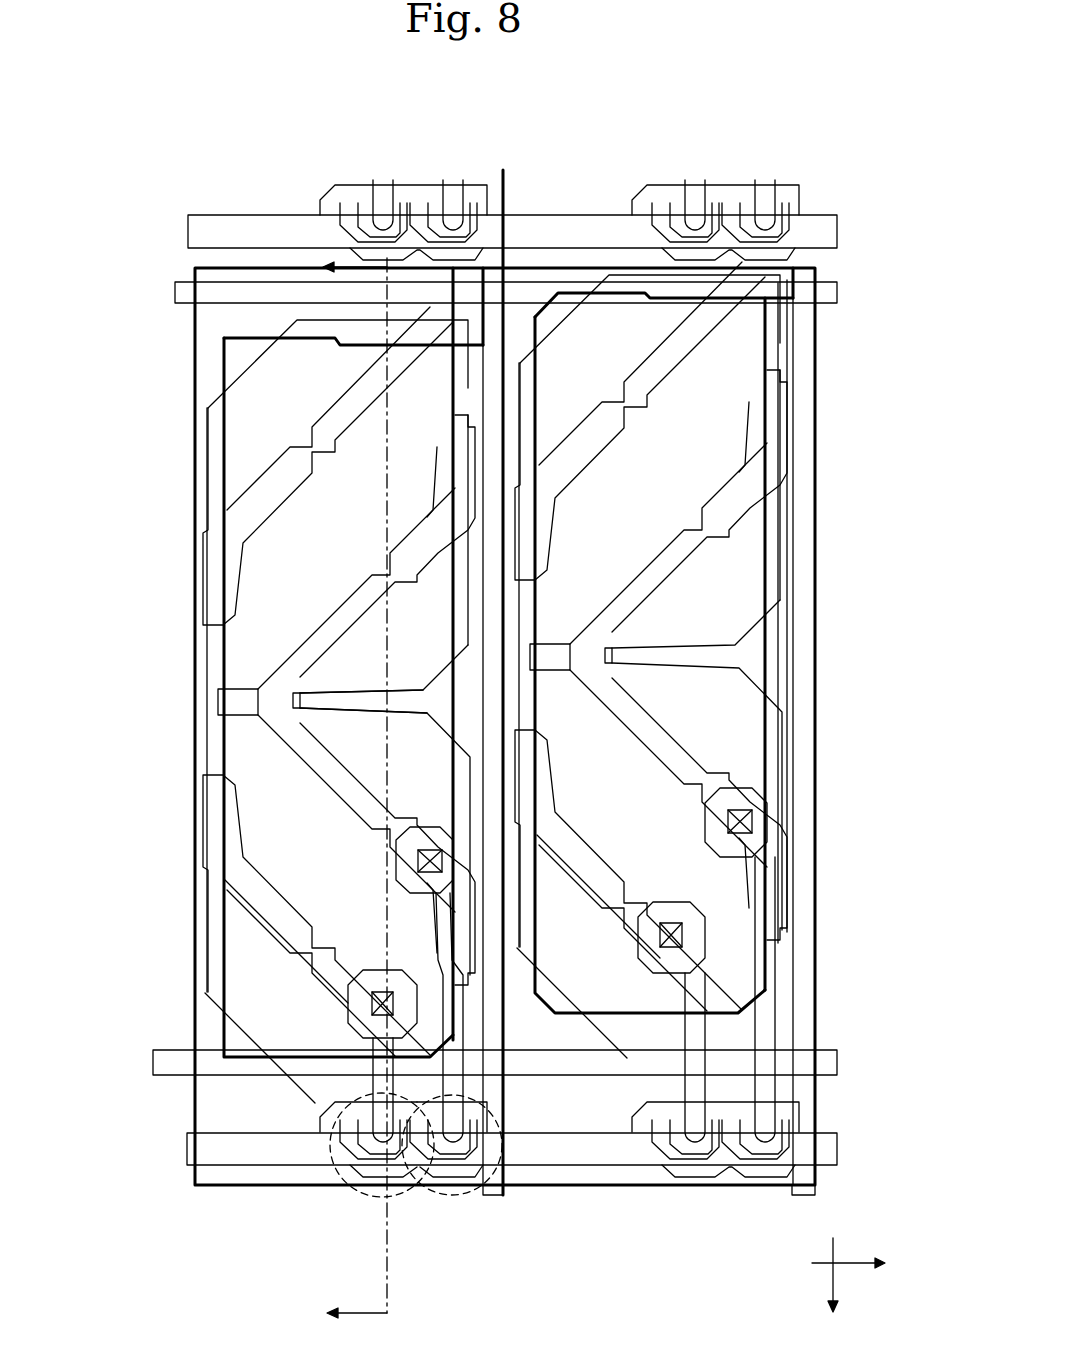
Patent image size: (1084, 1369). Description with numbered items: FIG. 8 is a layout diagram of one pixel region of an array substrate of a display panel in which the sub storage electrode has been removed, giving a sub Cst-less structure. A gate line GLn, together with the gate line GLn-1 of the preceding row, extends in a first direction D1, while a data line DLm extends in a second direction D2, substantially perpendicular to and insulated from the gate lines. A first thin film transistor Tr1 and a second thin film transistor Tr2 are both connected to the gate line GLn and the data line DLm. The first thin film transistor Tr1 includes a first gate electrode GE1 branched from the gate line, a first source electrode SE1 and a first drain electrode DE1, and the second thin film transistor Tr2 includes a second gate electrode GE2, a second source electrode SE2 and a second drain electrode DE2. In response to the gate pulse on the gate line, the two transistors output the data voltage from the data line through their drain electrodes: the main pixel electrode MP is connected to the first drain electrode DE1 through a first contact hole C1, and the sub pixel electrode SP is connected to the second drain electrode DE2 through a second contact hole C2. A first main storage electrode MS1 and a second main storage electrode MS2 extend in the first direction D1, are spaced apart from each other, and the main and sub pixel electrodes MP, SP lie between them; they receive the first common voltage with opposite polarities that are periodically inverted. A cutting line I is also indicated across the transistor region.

The gate line GLn-1 is at (188, 232).
The gate line GLn is at (187, 1148).
The first main storage electrode MS1 is at (175, 292).
The second main storage electrode MS2 is at (153, 1062).
The data line DLm is at (495, 1198).
The main pixel electrode MP is at (245, 965).
The sub pixel electrode SP is at (262, 750).
The first contact hole C1 is at (380, 987).
The second contact hole C2 is at (428, 844).
The first drain electrode DE1 is at (372, 1045).
The second drain electrode DE2 is at (393, 859).
The first gate electrode GE1 is at (325, 1098).
The second gate electrode GE2 is at (497, 1122).
The first source electrode SE1 is at (360, 1185).
The second source electrode SE2 is at (452, 1200).
The first thin film transistor Tr1 is at (348, 1201).
The second thin film transistor Tr2 is at (432, 1197).
The section line I-I' I is at (349, 792).
The first direction D1 is at (867, 1265).
The second direction D2 is at (833, 1292).